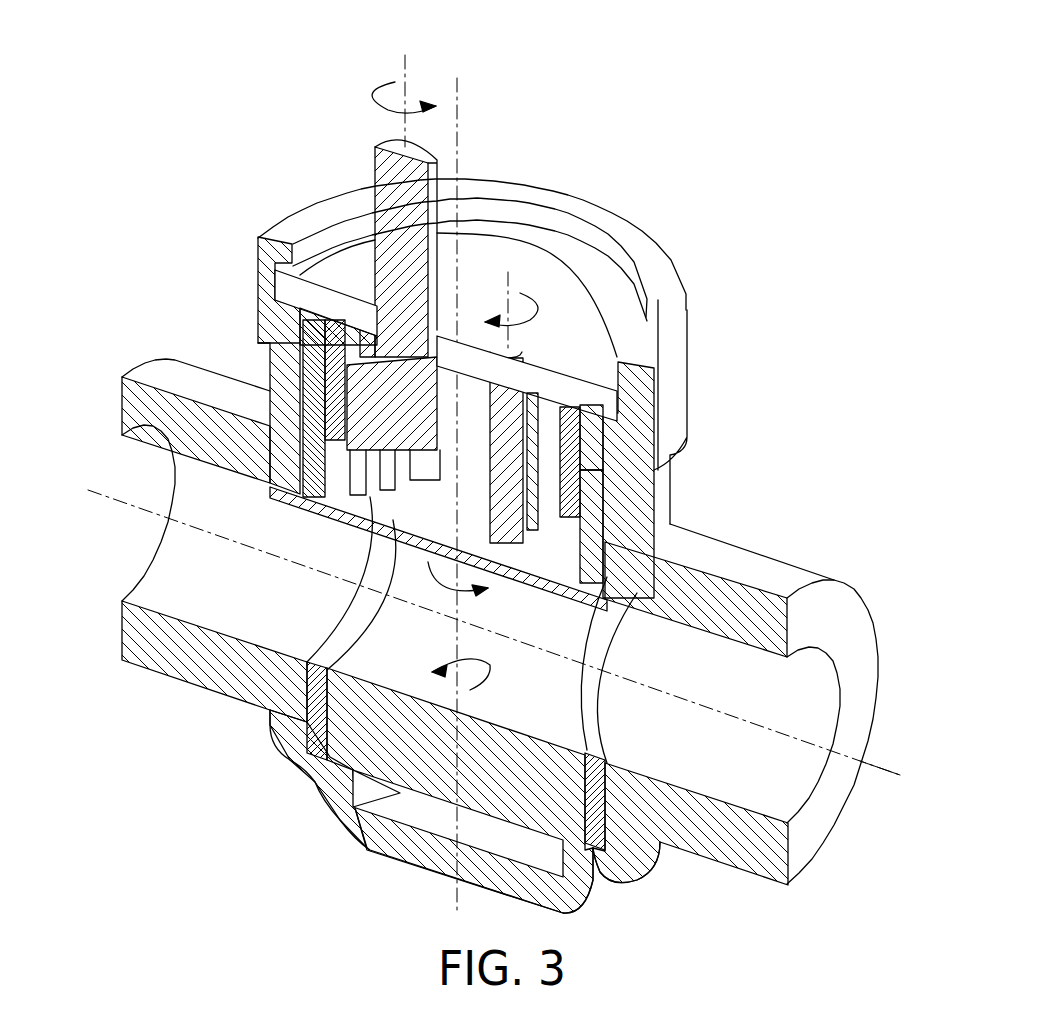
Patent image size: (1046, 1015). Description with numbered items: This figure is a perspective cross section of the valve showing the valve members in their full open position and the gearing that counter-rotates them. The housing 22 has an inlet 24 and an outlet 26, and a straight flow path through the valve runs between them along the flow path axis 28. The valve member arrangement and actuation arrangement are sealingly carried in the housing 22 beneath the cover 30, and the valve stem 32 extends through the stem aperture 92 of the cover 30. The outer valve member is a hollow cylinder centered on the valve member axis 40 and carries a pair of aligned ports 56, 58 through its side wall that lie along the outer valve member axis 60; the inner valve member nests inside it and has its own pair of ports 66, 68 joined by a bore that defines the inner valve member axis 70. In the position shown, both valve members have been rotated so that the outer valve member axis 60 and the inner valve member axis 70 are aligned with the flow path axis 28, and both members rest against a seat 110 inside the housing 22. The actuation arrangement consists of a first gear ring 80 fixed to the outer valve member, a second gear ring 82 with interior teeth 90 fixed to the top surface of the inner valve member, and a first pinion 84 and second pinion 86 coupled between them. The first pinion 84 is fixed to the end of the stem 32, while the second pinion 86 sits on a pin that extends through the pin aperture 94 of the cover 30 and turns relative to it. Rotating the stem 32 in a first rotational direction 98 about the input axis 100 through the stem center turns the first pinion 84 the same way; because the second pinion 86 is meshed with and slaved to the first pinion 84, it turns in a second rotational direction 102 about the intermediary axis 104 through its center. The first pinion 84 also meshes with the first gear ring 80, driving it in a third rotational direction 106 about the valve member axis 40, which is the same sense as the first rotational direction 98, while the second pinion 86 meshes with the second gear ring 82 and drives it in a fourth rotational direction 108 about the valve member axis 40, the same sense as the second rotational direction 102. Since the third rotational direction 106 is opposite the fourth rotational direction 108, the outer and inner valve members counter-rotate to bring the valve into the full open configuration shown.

The housing 22 is at (686, 270).
The inlet 24 is at (870, 598).
The outlet 26 is at (150, 365).
The axis 28 is at (895, 775).
The cover 30 is at (622, 300).
The valve stem 32 is at (375, 165).
The valve member axis 40 is at (457, 905).
The port 56 is at (323, 643).
The port 58 is at (627, 730).
The outer valve member axis 60 is at (92, 512).
The port 66 is at (340, 655).
The port 68 is at (607, 717).
The inner valve member axis 70 is at (128, 507).
The first gear ring 80 is at (583, 433).
The second gear ring 82 is at (607, 560).
The first pinion 84 is at (275, 378).
The second pinion 86 is at (350, 337).
The interior teeth 90 is at (373, 517).
The stem aperture 92 is at (460, 318).
The pin aperture 94 is at (617, 312).
The first rotational direction 98 is at (380, 95).
The input axis 100 is at (407, 58).
The second rotational direction 102 is at (515, 285).
The intermediary axis 104 is at (506, 275).
The third rotational direction 106 is at (350, 628).
The fourth rotational direction 108 is at (485, 686).
The seat 110 is at (597, 880).